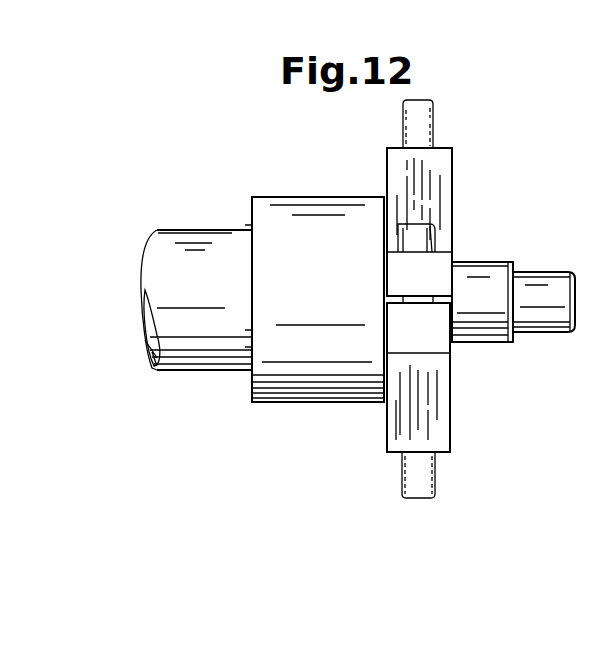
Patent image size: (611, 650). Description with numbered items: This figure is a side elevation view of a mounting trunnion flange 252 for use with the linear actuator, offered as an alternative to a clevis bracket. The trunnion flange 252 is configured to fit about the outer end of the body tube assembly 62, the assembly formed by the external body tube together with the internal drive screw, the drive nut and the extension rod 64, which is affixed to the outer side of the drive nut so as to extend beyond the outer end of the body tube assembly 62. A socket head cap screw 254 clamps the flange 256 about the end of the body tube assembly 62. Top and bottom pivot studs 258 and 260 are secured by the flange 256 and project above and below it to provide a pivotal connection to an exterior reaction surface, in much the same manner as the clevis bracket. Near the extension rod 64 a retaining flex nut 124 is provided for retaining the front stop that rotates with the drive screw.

The body tube assembly 62 is at (197, 230).
The extension rod 64 is at (488, 343).
The retaining flex nut 124 is at (548, 334).
The trunnion flange 252 is at (288, 412).
The socket head cap screw 254 is at (437, 235).
The flange 256 is at (440, 190).
The top pivot stud 258 is at (437, 128).
The bottom pivot stud 260 is at (436, 494).